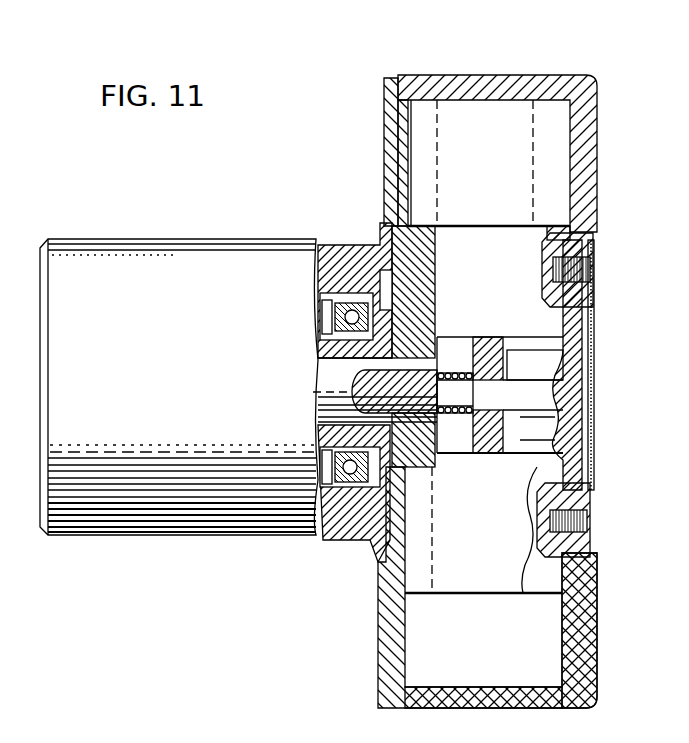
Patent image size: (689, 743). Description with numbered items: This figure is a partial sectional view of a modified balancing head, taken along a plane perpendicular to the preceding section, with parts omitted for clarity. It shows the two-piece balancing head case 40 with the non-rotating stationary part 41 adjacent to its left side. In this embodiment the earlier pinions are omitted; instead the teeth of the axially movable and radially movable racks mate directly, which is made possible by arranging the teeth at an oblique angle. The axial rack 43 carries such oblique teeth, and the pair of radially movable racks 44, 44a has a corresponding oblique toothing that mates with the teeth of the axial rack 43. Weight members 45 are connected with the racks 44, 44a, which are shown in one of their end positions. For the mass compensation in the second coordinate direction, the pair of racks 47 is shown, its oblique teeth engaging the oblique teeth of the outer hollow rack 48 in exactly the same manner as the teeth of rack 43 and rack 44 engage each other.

The balancing head case 40 is at (487, 75).
The non-rotating stationary part 41 is at (136, 240).
The axial rack 43 is at (452, 373).
The radially movable rack 44 is at (489, 337).
The radially movable rack 44a is at (487, 454).
The weight members 45 is at (594, 308).
The pair of racks 47 is at (425, 255).
The outer hollow rack 48 is at (334, 370).